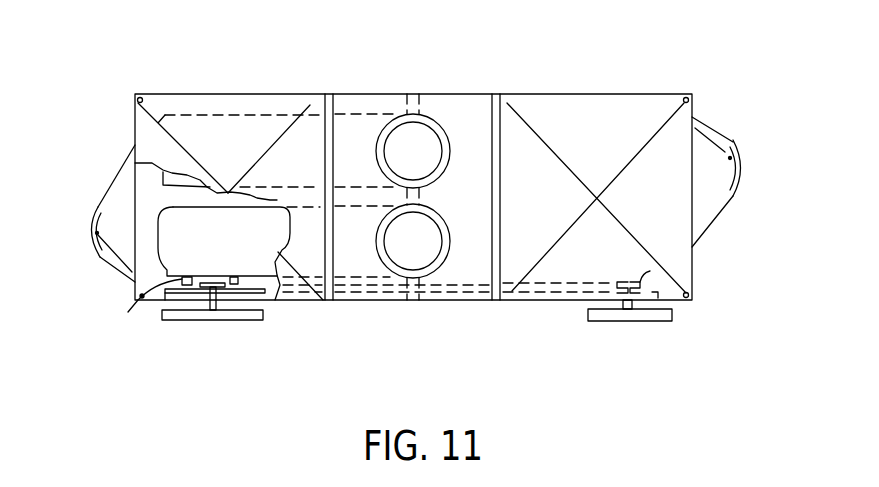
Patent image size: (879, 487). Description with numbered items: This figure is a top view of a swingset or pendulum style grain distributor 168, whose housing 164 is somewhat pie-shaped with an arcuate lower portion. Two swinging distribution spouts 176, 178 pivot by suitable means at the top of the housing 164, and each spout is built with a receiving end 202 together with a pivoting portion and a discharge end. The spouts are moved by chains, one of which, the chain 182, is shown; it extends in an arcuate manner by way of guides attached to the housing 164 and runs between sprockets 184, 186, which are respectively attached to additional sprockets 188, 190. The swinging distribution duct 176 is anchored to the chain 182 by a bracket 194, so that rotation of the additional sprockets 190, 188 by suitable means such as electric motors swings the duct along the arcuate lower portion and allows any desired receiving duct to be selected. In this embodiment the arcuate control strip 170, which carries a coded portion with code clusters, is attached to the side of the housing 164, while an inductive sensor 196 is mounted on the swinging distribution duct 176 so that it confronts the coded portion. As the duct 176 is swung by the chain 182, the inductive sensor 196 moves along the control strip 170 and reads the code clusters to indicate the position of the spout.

The housing 164 is at (618, 94).
The swingset distributor 168 is at (470, 77).
The arcuate control strip 170 is at (432, 297).
The swinging distribution spout 176 is at (167, 253).
The swinging distribution spout 178 is at (155, 160).
The chain 182 is at (263, 293).
The sprocket 184 is at (212, 278).
The sprocket 186 is at (650, 271).
The additional sprocket 188 is at (187, 322).
The additional sprocket 190 is at (623, 322).
The bracket 194 is at (235, 278).
The inductive sensor 196 is at (142, 296).
The receiving end 202 is at (387, 262).